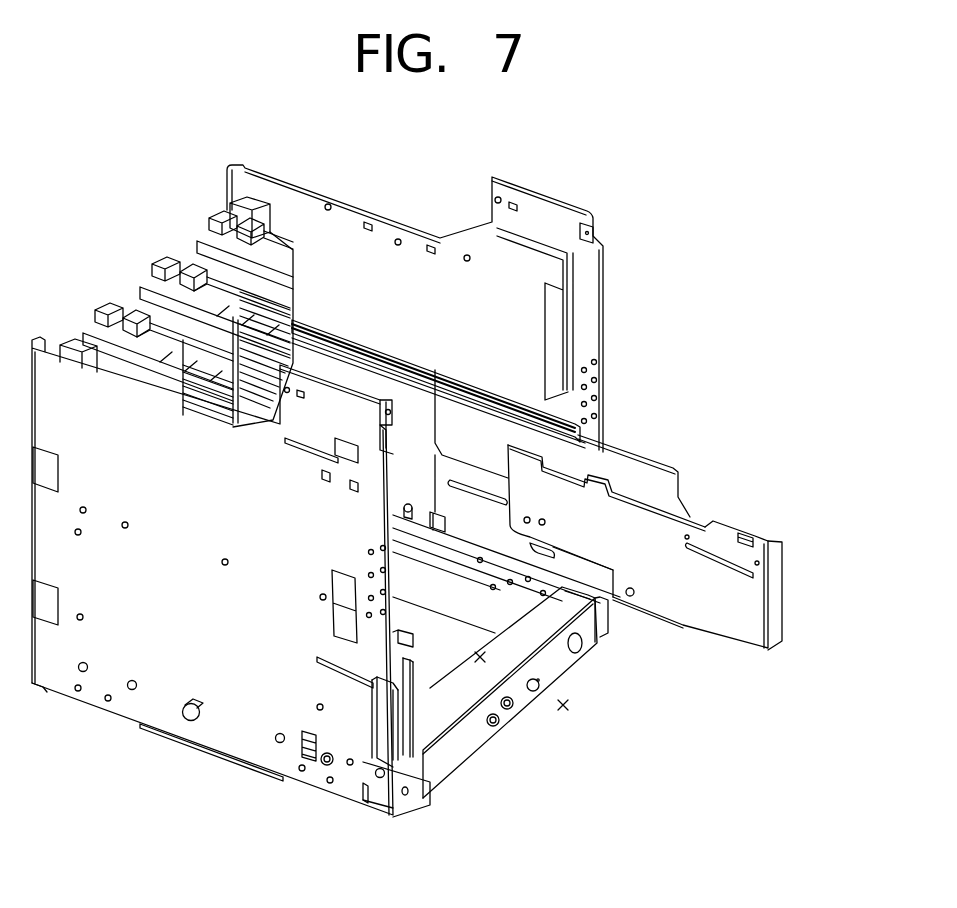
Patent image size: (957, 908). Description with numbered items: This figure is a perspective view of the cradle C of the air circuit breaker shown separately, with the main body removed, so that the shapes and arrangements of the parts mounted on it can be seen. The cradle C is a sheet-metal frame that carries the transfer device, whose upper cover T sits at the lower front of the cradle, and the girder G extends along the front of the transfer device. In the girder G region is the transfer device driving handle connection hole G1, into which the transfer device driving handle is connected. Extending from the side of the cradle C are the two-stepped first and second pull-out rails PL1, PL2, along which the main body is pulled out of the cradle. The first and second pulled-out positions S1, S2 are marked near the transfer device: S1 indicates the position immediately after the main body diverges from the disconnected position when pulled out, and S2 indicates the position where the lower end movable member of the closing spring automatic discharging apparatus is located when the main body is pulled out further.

The cradle C is at (242, 725).
The upper cover of the transfer device T is at (437, 660).
The girder G is at (555, 668).
The transfer device driving handle connection hole G1 is at (497, 720).
The first pulled-out position S1 is at (480, 657).
The second pulled-out position S2 is at (570, 708).
The first pull-out rail PL1 is at (745, 610).
The second pull-out rail PL2 is at (643, 477).